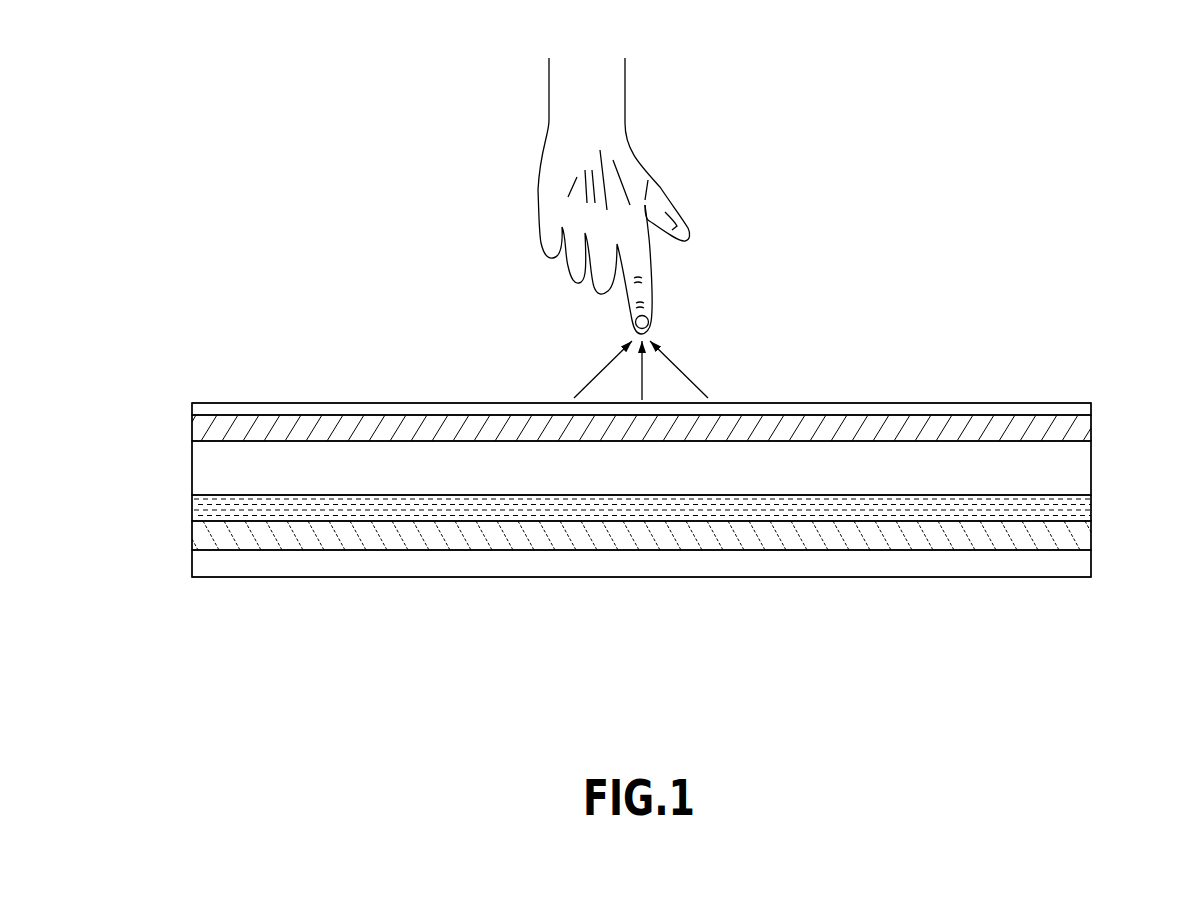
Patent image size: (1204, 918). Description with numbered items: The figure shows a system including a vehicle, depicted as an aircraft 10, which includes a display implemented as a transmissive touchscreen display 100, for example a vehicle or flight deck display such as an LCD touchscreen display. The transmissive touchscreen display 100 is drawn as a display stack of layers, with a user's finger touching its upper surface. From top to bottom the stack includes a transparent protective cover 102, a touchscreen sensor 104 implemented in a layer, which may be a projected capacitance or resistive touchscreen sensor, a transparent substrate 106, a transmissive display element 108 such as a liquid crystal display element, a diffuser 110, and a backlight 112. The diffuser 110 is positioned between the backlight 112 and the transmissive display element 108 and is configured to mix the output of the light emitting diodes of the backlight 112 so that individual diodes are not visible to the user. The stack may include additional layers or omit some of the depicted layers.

The aircraft 10 is at (253, 75).
The transmissive touchscreen display 100 is at (318, 225).
The transparent protective cover 102 is at (1091, 408).
The touchscreen sensor 104 is at (1091, 430).
The transparent substrate 106 is at (1091, 468).
The transmissive display element 108 is at (1091, 508).
The diffuser 110 is at (1091, 535).
The backlight 112 is at (1091, 563).